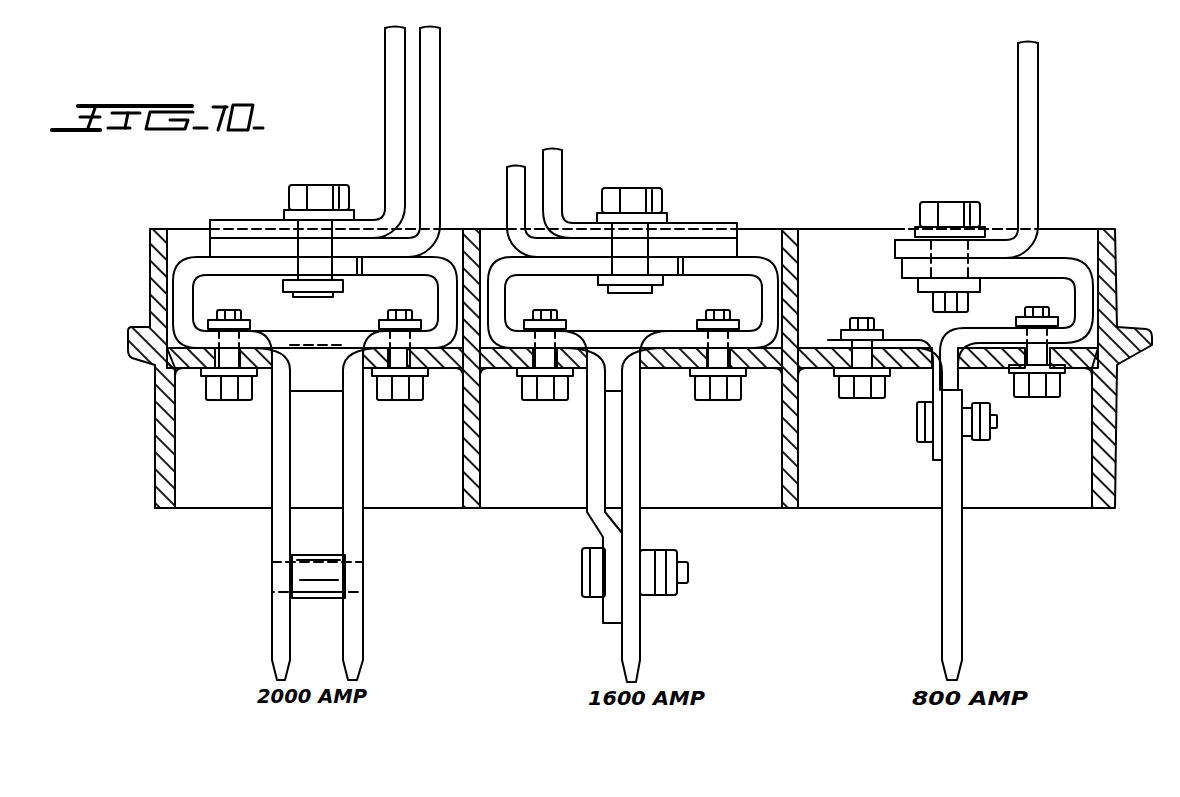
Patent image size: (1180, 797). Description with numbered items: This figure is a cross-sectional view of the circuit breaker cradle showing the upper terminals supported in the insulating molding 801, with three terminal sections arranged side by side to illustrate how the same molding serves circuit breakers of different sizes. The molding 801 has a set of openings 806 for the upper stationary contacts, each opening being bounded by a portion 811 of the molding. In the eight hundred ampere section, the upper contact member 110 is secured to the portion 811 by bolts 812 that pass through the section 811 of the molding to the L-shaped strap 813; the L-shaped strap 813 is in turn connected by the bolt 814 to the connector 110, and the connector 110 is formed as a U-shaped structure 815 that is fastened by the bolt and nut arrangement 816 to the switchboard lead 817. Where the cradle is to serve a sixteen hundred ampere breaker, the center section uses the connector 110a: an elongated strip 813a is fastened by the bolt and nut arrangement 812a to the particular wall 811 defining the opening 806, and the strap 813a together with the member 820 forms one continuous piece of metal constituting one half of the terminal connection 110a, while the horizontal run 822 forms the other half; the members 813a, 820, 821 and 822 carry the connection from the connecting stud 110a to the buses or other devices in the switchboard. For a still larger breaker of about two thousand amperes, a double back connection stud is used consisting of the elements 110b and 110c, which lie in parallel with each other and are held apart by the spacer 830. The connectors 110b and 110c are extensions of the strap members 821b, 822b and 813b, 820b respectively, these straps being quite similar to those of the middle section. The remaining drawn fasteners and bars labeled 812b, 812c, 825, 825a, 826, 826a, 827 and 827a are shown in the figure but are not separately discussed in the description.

The molding 801 is at (1118, 258).
The openings 806 is at (371, 380).
The portions surrounding the openings 811 is at (503, 373).
The bolts 812 is at (850, 397).
The bolt and nut arrangement 812a is at (550, 403).
The clamping bolt 812b is at (404, 400).
The clamping bolt 812c is at (230, 407).
The L-shaped strap 813 is at (900, 345).
The elongated strip 813a is at (580, 330).
The strap member 813b is at (265, 325).
The bolt 814 is at (917, 420).
The U-shaped structure 815 is at (1050, 255).
The bolt and nut arrangement 816 is at (965, 185).
The switchboard lead 817 is at (1038, 117).
The member 820 is at (508, 298).
The strap member 820b is at (193, 298).
The member 821 is at (762, 295).
The strap member 821b is at (433, 298).
The horizontal run 822 is at (717, 280).
The strap member 822b is at (418, 278).
The terminal bolt 825 is at (637, 187).
The terminal bolt 825a is at (303, 185).
The terminal bar 826 is at (565, 163).
The terminal bar 826a is at (441, 102).
The terminal bar 827 is at (514, 166).
The terminal bar 827a is at (387, 110).
The spacer 830 is at (335, 540).
The upper stationary contact 110 is at (965, 587).
The connector 110a is at (640, 528).
The connection stud element 110b is at (363, 641).
The connection stud element 110c is at (272, 636).